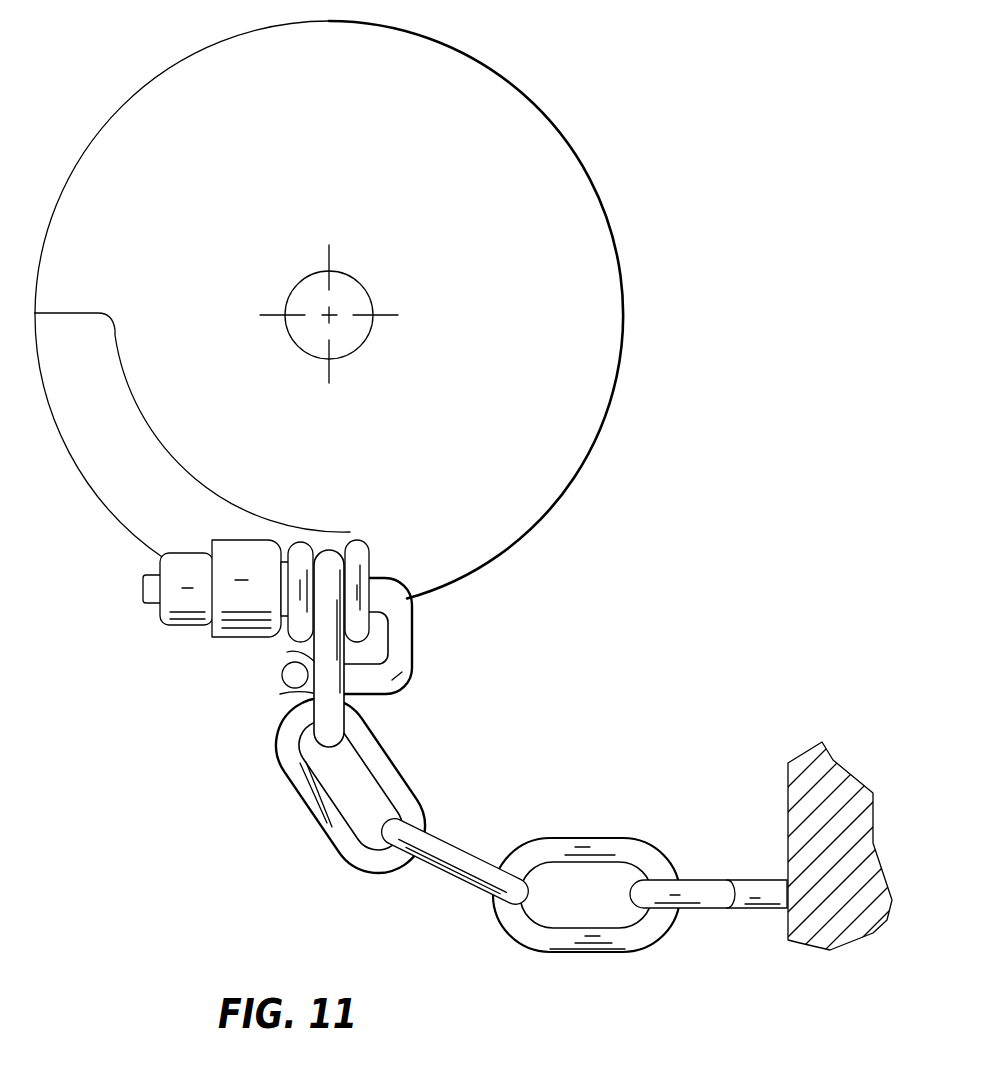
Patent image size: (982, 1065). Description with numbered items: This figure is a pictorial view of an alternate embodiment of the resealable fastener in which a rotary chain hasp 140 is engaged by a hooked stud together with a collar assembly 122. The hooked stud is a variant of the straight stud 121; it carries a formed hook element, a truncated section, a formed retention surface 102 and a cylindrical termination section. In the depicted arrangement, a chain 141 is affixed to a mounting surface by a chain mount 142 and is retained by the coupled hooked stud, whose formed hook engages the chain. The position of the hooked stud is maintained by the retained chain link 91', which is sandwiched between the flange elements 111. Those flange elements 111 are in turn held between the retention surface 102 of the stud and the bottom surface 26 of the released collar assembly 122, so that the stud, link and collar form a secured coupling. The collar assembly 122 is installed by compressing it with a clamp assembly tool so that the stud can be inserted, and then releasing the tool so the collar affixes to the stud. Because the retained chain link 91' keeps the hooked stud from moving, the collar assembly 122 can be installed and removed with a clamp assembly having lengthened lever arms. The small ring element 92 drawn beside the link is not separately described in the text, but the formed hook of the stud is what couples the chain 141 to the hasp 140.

The rotary chain hasp 140 is at (619, 254).
The bottom surface 26 is at (283, 560).
The flange elements 111 is at (300, 548).
The retention surface 102 is at (383, 627).
The straight stud 121 is at (432, 650).
The collar assembly 122 is at (231, 646).
The retained chain link 91' is at (246, 687).
The ring 92 is at (290, 695).
The chain 141 is at (476, 814).
The chain mount 142 is at (775, 878).